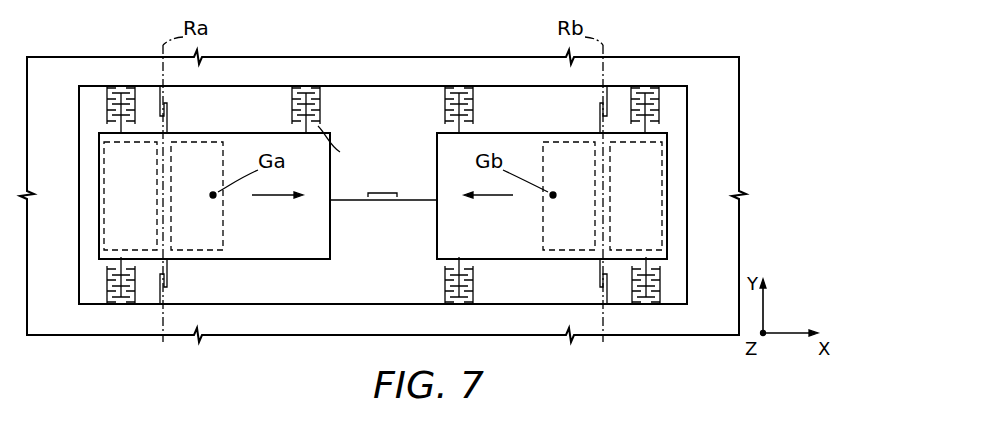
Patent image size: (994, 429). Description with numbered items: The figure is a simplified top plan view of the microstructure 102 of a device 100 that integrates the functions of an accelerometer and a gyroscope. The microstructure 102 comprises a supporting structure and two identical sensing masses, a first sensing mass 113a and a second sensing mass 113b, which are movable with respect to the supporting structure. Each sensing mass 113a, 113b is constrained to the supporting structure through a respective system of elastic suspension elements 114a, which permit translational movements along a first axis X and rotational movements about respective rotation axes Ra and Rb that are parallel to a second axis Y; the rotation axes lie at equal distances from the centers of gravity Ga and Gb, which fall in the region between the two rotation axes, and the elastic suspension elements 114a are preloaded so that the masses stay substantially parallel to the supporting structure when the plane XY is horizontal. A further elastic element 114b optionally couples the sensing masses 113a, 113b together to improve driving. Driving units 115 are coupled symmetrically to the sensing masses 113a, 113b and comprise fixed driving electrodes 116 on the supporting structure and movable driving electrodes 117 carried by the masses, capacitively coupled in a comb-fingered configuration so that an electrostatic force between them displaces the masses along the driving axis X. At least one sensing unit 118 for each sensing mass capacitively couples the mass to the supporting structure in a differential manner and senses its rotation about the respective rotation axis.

The device 100 is at (633, 352).
The microstructure 102 is at (268, 350).
The first sensing mass 113a is at (317, 250).
The second sensing mass 113b is at (497, 250).
The elastic suspension elements 114a is at (167, 108).
The further elastic element 114b is at (375, 200).
The driving units 115 is at (100, 99).
The fixed driving electrodes 116 is at (320, 104).
The movable driving electrodes 117 is at (347, 144).
The sensing unit 118 is at (88, 206).